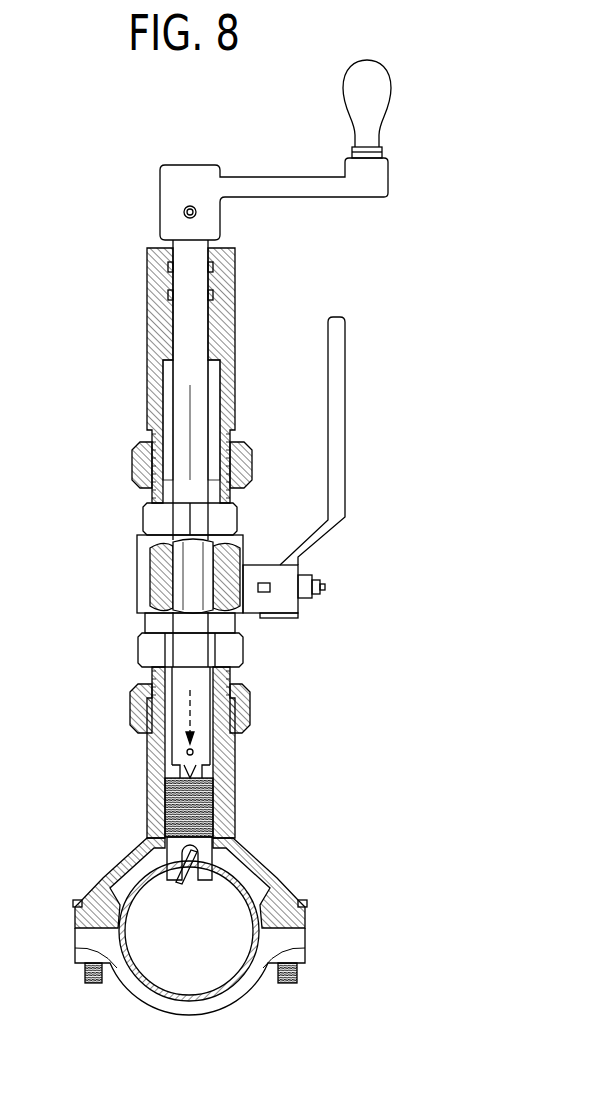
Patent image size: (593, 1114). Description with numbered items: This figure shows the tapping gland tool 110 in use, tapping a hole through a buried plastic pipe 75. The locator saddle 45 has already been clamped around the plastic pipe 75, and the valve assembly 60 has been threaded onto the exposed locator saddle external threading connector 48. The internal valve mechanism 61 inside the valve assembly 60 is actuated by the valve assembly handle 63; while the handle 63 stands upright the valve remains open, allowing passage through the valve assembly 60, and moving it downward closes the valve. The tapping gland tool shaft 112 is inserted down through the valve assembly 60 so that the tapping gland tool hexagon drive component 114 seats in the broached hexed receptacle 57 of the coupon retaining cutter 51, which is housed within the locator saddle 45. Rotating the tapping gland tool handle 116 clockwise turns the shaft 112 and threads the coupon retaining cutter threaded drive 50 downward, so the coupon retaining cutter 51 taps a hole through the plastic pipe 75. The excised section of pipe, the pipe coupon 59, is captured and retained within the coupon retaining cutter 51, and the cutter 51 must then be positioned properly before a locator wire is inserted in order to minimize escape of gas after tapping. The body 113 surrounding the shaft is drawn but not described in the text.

The tapping gland tool handle 116 is at (340, 186).
The tapping gland tool shaft 112 is at (187, 273).
The housing body 113 is at (222, 317).
The valve assembly handle 63 is at (338, 410).
The locator saddle external threading connector 48 is at (243, 447).
The tapping gland tool 110 is at (108, 462).
The internal valve mechanism 61 is at (213, 553).
The valve assembly 60 is at (310, 662).
The tapping gland tool hexagon drive component 114 is at (175, 772).
The broached hexed receptacle 57 is at (207, 765).
The locator saddle 45 is at (317, 835).
The coupon retaining cutter threaded drive 50 is at (175, 800).
The coupon retaining cutter 51 is at (203, 850).
The pipe coupon 59 is at (175, 882).
The plastic pipe 75 is at (212, 957).